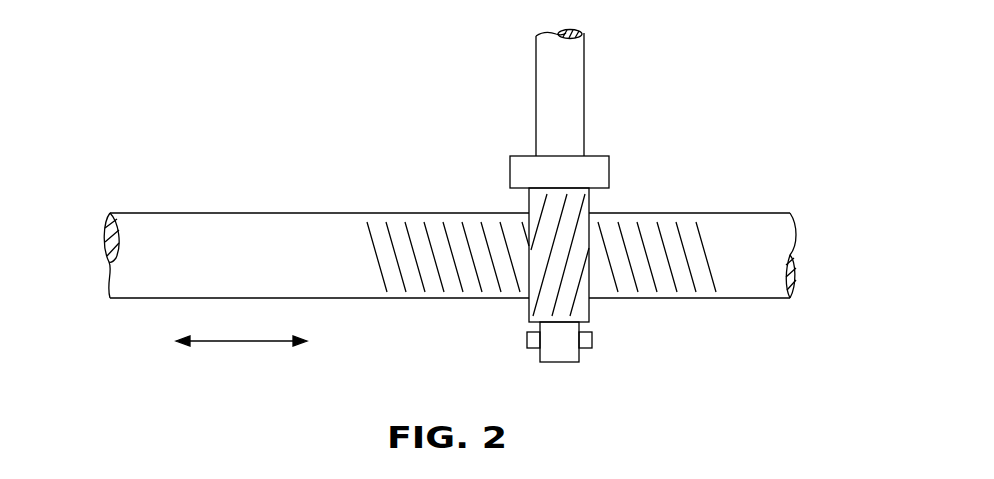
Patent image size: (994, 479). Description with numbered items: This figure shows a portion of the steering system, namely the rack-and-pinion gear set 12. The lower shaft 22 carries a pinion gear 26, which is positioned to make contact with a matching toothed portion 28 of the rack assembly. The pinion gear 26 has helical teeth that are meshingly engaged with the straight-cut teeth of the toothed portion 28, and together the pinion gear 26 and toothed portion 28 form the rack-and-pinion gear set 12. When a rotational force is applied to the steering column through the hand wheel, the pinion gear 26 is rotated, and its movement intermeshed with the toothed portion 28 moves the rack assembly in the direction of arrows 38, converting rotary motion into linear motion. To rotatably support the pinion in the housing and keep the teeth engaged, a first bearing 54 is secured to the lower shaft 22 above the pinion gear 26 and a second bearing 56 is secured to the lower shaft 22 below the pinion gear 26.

The rack-and-pinion gear set 12 is at (483, 341).
The lower shaft 22 is at (576, 71).
The pinion gear 26 is at (576, 298).
The toothed portion 28 is at (658, 225).
The arrows 38 is at (228, 341).
The first bearing 54 is at (603, 155).
The second bearing 56 is at (583, 348).